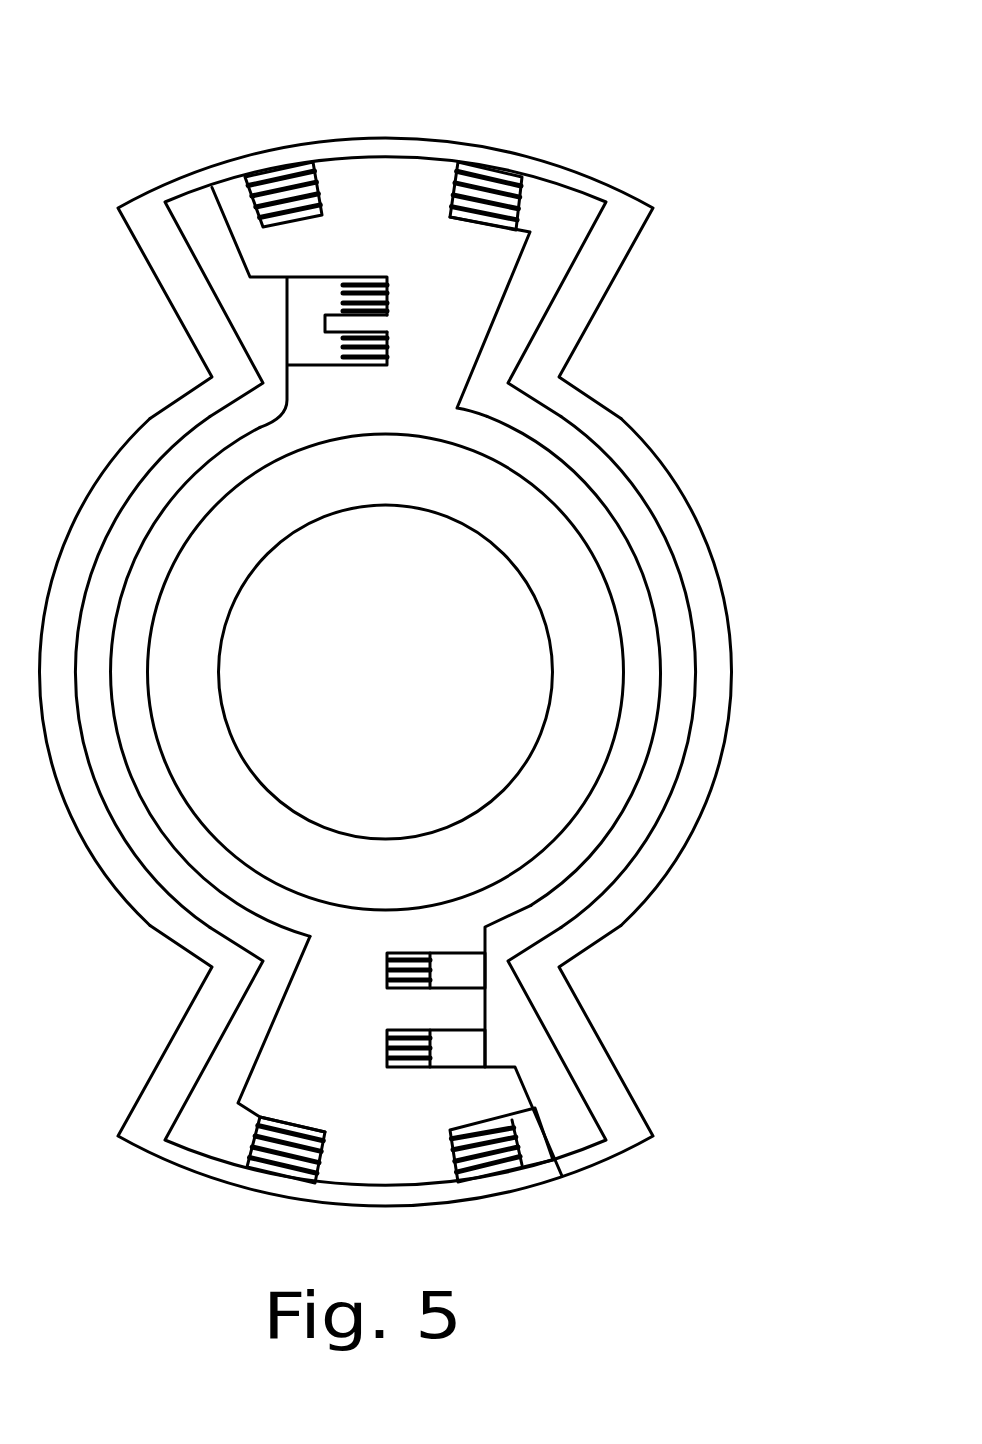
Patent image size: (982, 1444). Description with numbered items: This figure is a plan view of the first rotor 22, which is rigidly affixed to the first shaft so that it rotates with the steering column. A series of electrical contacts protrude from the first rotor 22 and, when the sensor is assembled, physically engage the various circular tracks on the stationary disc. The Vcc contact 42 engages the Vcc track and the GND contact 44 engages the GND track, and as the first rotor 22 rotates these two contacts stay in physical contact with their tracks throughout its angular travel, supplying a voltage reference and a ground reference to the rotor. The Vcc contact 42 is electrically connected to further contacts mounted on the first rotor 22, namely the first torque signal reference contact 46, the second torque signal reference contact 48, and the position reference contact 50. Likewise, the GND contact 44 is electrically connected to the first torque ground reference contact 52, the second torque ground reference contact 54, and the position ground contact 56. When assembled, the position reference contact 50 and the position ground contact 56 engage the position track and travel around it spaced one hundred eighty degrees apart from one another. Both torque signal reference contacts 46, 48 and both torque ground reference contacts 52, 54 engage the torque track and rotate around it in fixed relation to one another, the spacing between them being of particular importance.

The first rotor 22 is at (698, 898).
The Vcc contact 42 is at (363, 367).
The GND contact 44 is at (400, 953).
The first torque signal reference contact 46 is at (286, 182).
The second torque signal reference contact 48 is at (270, 1170).
The position reference contact 50 is at (384, 278).
The first torque ground reference contact 52 is at (483, 163).
The second torque ground reference contact 54 is at (505, 1173).
The position ground contact 56 is at (440, 1068).